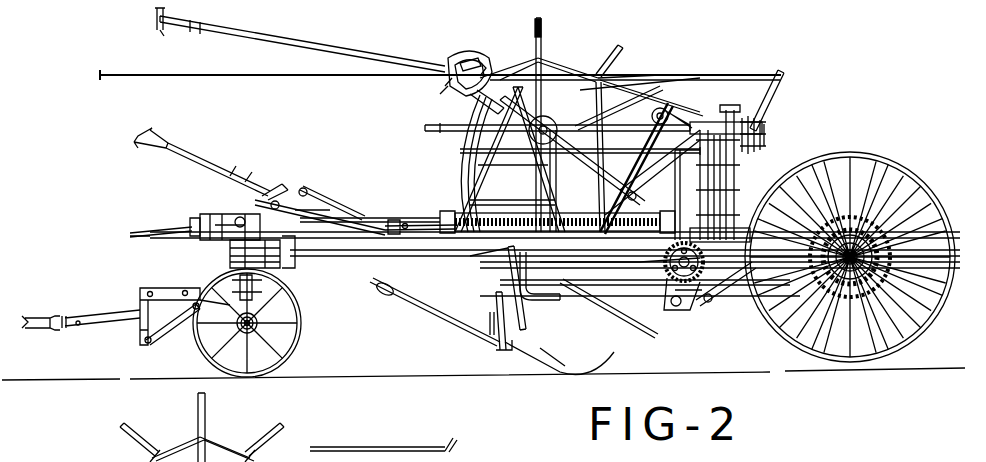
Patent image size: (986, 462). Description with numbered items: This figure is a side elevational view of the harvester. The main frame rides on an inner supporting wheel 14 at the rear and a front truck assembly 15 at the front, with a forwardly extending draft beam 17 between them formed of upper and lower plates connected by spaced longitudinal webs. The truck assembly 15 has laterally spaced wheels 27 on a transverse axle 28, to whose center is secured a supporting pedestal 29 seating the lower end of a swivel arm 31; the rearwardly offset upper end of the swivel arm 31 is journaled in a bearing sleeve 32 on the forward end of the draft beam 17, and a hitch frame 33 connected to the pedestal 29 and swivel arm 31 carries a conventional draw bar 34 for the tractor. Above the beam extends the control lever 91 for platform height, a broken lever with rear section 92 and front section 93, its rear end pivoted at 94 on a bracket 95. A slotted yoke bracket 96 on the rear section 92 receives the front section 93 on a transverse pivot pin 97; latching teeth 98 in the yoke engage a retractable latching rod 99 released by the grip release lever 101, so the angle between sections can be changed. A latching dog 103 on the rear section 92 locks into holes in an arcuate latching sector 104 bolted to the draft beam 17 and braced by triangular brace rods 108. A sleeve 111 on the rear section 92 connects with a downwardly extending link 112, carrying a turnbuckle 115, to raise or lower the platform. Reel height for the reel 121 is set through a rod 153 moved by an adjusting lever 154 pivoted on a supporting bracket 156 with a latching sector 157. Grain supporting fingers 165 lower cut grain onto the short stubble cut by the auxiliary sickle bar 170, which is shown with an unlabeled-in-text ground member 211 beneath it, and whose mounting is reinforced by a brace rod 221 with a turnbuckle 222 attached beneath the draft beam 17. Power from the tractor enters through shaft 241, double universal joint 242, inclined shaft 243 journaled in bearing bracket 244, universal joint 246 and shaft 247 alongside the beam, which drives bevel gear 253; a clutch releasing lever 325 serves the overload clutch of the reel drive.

The inner supporting wheel 14 is at (935, 322).
The front truck assembly 15 is at (180, 356).
The draft beam 17 is at (352, 250).
The wheels 27 is at (204, 370).
The transverse axle 28 is at (266, 332).
The supporting pedestal 29 is at (258, 320).
The swivel arm 31 is at (262, 294).
The bearing sleeve 32 is at (250, 250).
The hitch frame 33 is at (144, 294).
The draw bar 34 is at (82, 318).
The control lever 91 is at (397, 49).
The rear lever section 92 is at (578, 150).
The front lever section 93 is at (290, 40).
The pivot 94 is at (630, 188).
The bracket 95 is at (636, 192).
The slotted yoke bracket 96 is at (446, 82).
The transverse pivot pin 97 is at (452, 62).
The latching teeth 98 is at (468, 94).
The retractable latching rod 99 is at (492, 66).
The grip release lever 101 is at (162, 30).
The latching dog 103 is at (468, 56).
The arcuate latching sector 104 is at (466, 176).
The brace rods 108 is at (486, 151).
The sleeve 111 is at (572, 128).
The link 112 is at (528, 200).
The turnbuckle 115 is at (548, 168).
The reel 121 is at (426, 128).
The rod 153 is at (356, 222).
The adjusting lever 154 is at (226, 170).
The supporting bracket 156 is at (310, 200).
The latching sector 157 is at (276, 186).
The grain supporting and directing fingers 165 is at (648, 325).
The auxiliary sickle bar 170 is at (498, 345).
The runner shoe 211 is at (552, 358).
The brace rod 221 is at (443, 308).
The turnbuckle 222 is at (380, 293).
The shaft 241 is at (140, 235).
The double universal joint 242 is at (238, 212).
The shaft 243 is at (378, 228).
The bearing bracket 244 is at (322, 254).
The universal joint 246 is at (508, 254).
The shaft 247 is at (556, 280).
The bevel gear 253 is at (705, 305).
The clutch releasing lever 325 is at (770, 88).